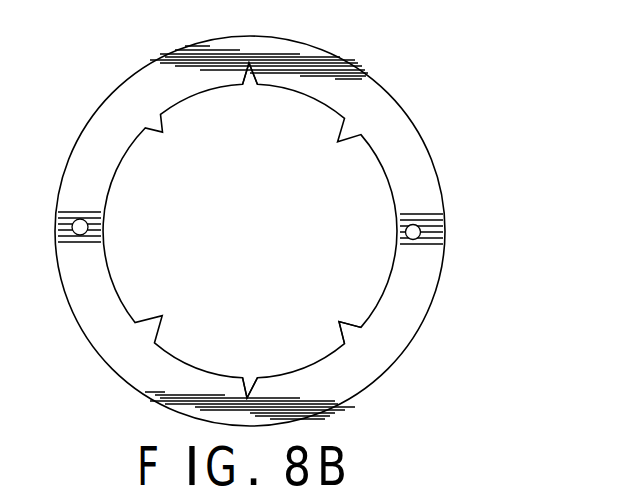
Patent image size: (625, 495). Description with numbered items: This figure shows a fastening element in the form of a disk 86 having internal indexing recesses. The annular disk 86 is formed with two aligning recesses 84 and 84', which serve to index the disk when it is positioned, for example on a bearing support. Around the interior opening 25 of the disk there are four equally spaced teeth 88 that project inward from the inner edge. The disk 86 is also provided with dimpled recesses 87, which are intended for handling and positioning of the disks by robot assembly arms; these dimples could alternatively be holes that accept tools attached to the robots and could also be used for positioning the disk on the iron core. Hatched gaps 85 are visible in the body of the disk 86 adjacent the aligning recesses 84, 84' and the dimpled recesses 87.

The bore / central opening 25 is at (320, 201).
The aligning recess 84 is at (310, 51).
The aligning recess 84' is at (261, 408).
The gap 85 is at (361, 80).
The disk 86 is at (416, 172).
The dimpled recess 87 is at (424, 224).
The tooth 88 is at (345, 320).